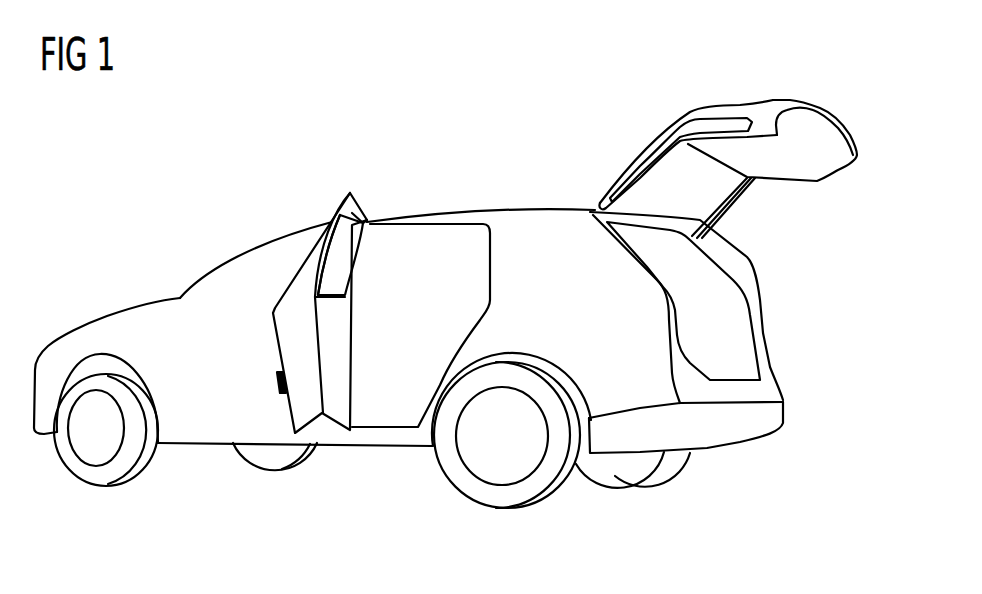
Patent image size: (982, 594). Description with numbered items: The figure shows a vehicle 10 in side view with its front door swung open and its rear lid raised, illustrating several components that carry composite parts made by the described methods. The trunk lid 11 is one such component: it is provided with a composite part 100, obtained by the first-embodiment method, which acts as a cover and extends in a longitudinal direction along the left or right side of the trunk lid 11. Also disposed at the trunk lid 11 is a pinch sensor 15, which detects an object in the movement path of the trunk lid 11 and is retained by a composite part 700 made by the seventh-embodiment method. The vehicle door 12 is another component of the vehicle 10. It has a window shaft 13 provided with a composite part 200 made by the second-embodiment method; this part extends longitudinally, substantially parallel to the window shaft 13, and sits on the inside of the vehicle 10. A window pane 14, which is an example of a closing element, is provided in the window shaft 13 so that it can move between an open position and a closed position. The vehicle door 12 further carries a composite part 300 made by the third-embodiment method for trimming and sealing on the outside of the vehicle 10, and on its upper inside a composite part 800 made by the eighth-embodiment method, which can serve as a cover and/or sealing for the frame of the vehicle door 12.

The vehicle 10 is at (146, 214).
The trunk lid 11 is at (833, 124).
The vehicle door 12 is at (266, 345).
The window shaft 13 is at (338, 284).
The window pane 14 is at (350, 233).
The pinch sensor 15 is at (365, 221).
The composite part 100 is at (692, 116).
The composite part 200 is at (341, 299).
The composite part 300 is at (278, 383).
The composite part 700 is at (688, 154).
The composite part 800 is at (359, 218).